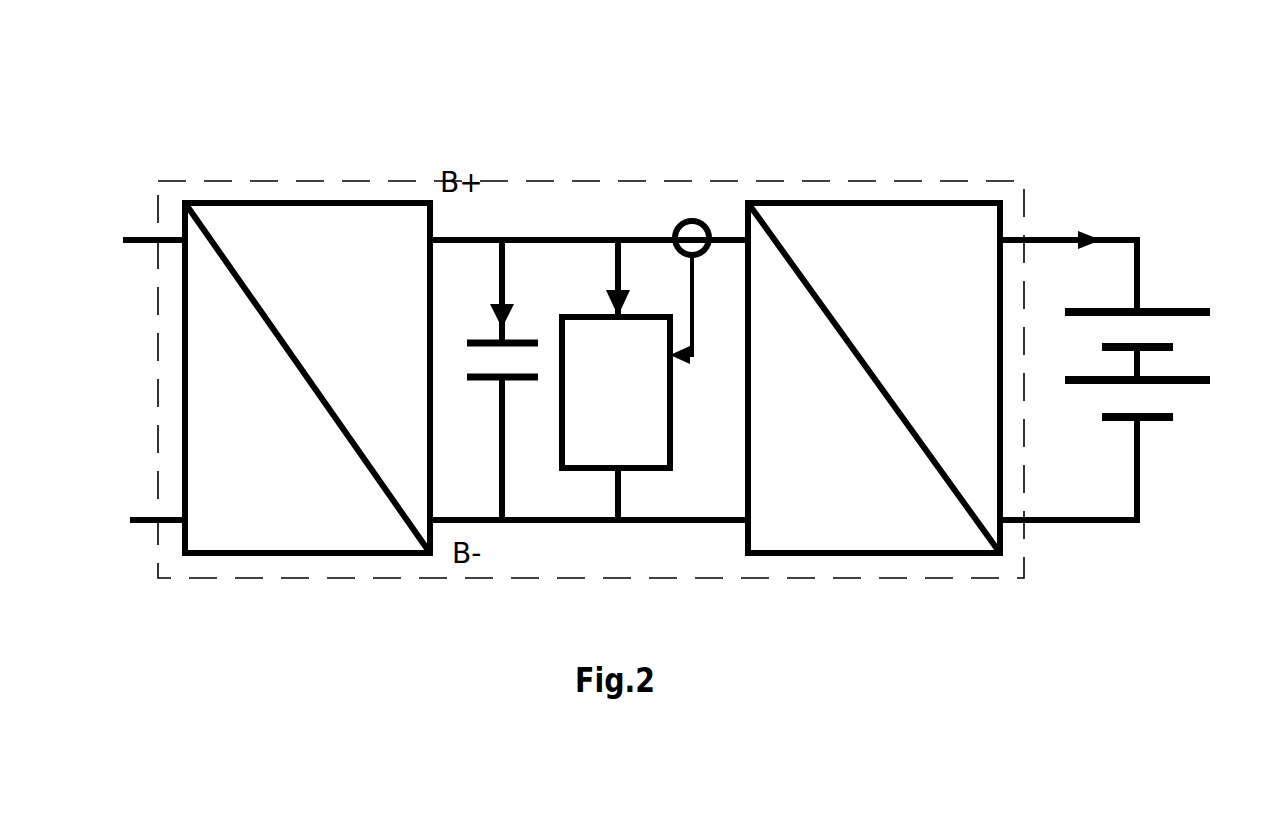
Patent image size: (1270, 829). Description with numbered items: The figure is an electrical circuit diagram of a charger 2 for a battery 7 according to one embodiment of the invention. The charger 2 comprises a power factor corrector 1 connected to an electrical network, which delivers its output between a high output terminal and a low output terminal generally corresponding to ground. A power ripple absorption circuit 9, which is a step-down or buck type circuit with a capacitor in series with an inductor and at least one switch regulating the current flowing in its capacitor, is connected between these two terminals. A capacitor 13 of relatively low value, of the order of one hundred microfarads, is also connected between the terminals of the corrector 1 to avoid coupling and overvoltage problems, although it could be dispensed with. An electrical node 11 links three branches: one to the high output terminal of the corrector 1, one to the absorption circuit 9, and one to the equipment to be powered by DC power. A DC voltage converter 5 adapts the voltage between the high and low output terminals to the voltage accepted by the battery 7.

The power factor corrector 1 is at (326, 200).
The charger 2 is at (950, 588).
The DC voltage converter 5 is at (856, 205).
The battery 7 is at (1192, 305).
The power ripple absorption circuit 9 is at (635, 370).
The electrical node 11 is at (618, 240).
The capacitor 13 is at (499, 382).